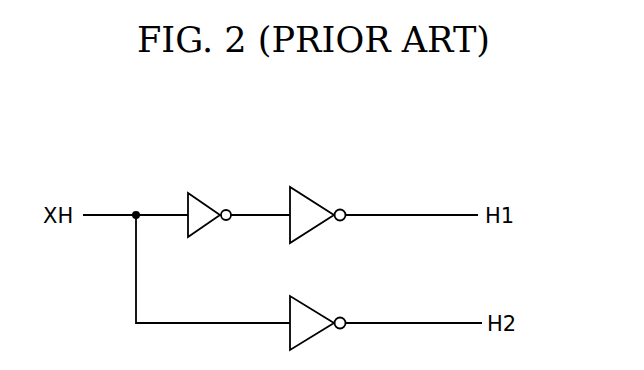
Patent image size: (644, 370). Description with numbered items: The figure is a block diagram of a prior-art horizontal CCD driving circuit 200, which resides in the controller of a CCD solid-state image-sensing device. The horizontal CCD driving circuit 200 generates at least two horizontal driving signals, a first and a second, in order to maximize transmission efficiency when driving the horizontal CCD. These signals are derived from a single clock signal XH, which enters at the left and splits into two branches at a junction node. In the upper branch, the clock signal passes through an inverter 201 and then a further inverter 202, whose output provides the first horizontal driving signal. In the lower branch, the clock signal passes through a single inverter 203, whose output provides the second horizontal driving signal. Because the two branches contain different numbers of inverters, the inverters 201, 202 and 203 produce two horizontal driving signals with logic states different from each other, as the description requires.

The horizontal CCD driving circuit 200 is at (520, 146).
The inverter 201 is at (208, 204).
The inverter 202 is at (313, 198).
The inverter 203 is at (315, 305).